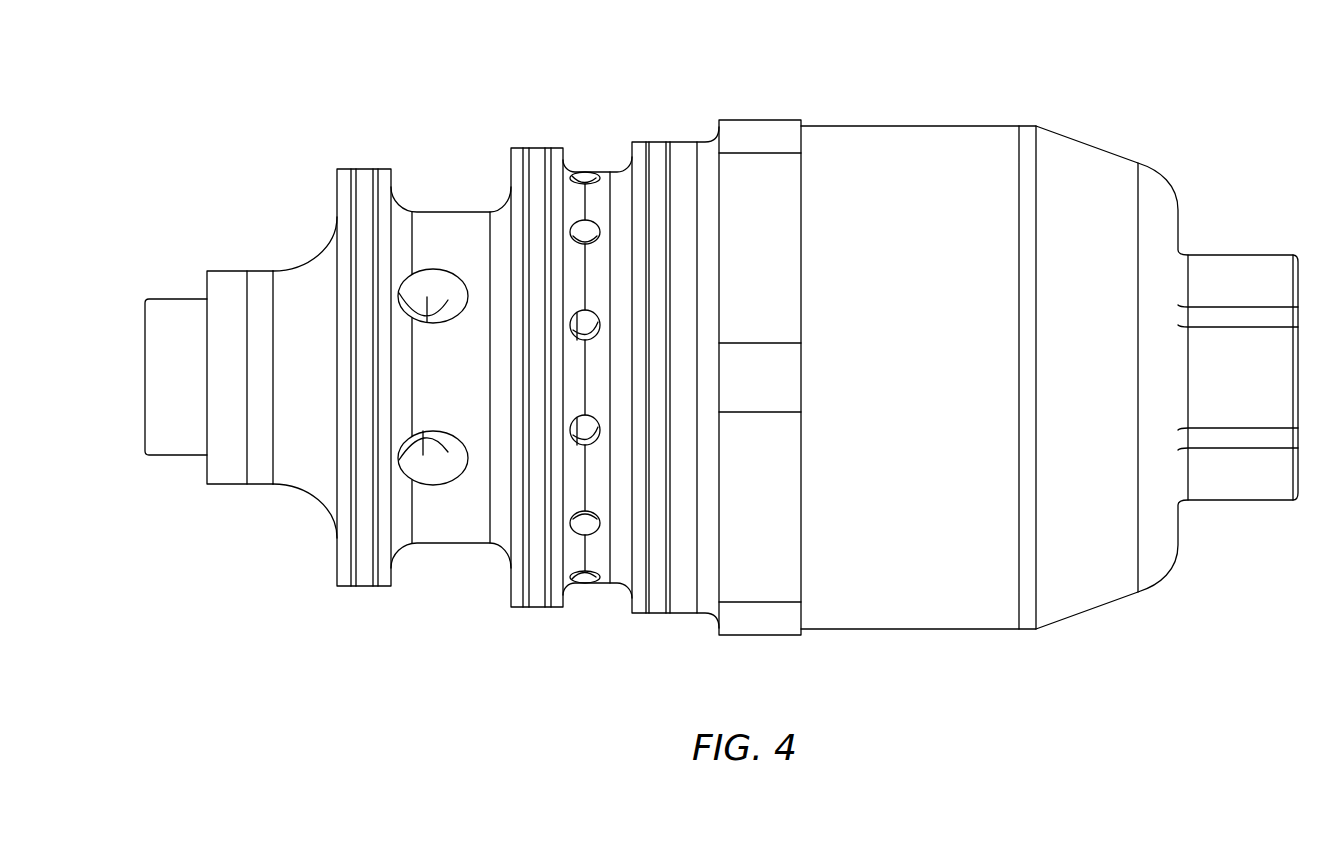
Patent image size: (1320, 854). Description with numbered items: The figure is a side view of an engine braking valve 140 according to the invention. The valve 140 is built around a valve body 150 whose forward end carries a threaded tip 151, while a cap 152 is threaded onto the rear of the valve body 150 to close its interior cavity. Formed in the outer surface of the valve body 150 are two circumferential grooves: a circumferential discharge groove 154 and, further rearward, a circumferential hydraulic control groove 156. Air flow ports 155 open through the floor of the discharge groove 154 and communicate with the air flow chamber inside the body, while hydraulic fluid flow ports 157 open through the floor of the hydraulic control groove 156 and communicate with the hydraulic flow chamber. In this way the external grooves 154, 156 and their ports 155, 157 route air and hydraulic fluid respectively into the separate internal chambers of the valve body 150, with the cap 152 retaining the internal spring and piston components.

The engine braking valve 140 is at (883, 98).
The valve body 150 is at (760, 636).
The threaded tip 151 is at (175, 456).
The cap 152 is at (935, 617).
The circumferential discharge groove 154 is at (443, 562).
The air flow ports 155 is at (432, 285).
The circumferential hydraulic control groove 156 is at (592, 596).
The hydraulic fluid flow ports 157 is at (583, 178).